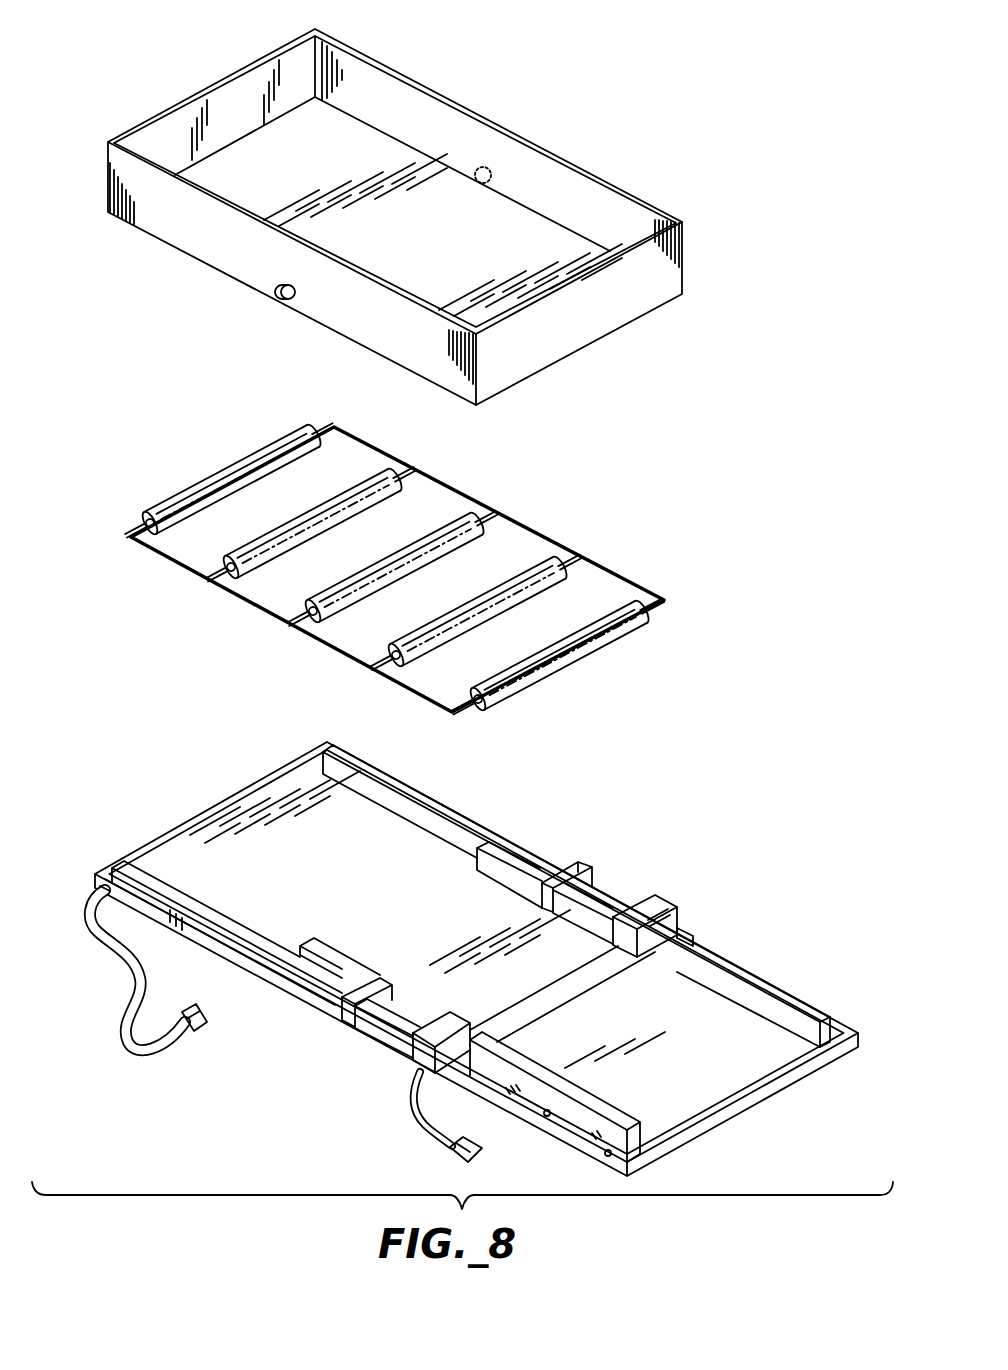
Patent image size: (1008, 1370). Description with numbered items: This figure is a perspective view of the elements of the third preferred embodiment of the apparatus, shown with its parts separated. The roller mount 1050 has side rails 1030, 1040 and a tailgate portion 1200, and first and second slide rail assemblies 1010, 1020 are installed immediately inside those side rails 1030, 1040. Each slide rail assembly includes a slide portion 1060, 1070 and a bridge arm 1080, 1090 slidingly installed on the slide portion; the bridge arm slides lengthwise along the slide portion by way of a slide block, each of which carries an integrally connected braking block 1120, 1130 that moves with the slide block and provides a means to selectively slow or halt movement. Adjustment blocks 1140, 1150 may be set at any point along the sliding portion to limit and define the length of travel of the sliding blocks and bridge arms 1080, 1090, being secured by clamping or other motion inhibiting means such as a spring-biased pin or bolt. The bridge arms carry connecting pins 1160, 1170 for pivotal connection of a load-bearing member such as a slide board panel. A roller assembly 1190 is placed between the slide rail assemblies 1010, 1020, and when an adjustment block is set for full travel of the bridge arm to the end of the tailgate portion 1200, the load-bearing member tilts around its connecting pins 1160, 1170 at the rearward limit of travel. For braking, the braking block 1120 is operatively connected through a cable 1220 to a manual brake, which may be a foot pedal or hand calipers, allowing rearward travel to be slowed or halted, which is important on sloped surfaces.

The first slide rail assembly 1010 is at (256, 920).
The second slide rail assembly 1020 is at (431, 1000).
The side rail 1030 is at (258, 963).
The side rail 1040 is at (393, 782).
The roller mount 1050 is at (364, 1044).
The slide portion 1060 is at (143, 873).
The slide portion 1070 is at (345, 768).
The bridge arm 1080 is at (323, 960).
The bridge arm 1090 is at (492, 847).
The braking block 1120 is at (410, 1060).
The braking block 1130 is at (675, 892).
The adjustment block 1140 is at (340, 1016).
The adjustment block 1150 is at (582, 860).
The connecting pin 1160 is at (266, 294).
The connecting pin 1170 is at (475, 182).
The roller assembly 1190 is at (596, 524).
The tailgate portion 1200 is at (742, 1078).
The cable 1220 is at (482, 1148).